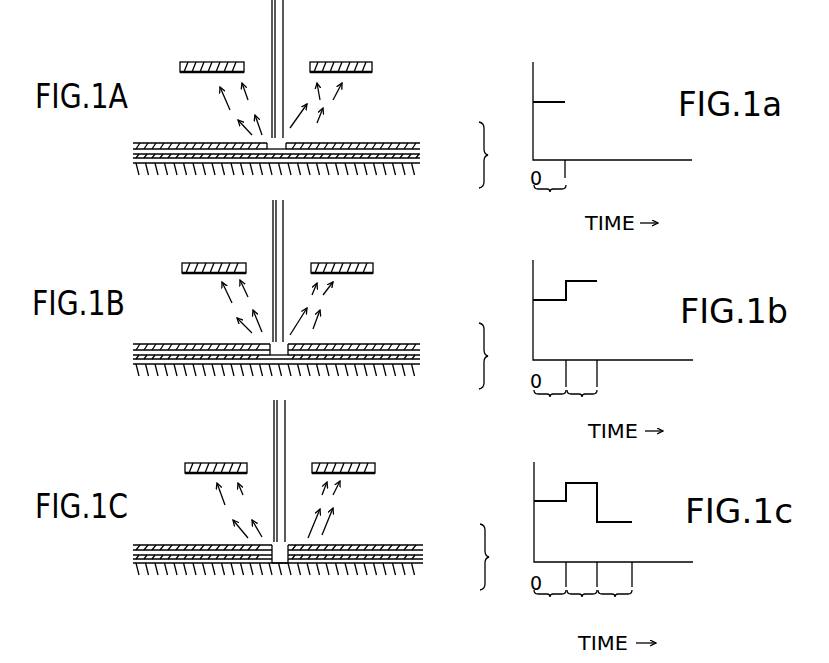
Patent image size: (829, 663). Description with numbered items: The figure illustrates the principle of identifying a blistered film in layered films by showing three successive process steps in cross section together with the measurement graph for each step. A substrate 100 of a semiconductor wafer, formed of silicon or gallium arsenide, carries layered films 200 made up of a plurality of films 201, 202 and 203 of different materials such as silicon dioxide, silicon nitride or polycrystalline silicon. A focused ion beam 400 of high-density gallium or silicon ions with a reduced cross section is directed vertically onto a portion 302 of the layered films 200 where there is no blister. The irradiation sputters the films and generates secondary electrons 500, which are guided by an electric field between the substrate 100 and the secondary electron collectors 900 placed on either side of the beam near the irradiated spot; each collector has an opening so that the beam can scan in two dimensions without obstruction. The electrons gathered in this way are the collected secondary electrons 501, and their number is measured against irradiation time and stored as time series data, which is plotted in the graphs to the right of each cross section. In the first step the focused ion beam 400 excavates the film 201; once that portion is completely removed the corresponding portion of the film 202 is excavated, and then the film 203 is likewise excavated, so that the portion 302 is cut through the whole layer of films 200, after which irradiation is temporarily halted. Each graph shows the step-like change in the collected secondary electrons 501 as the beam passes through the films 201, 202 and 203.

In FIG. 1A, the substrate 100 is at (153, 165).
In FIG. 1B, the substrate 100 is at (275, 390).
In FIG. 1C, the substrate 100 is at (275, 593).
In FIG. 1A, the layered films 200 is at (503, 155).
In FIG. 1B, the layered films 200 is at (503, 356).
In FIG. 1C, the layered films 200 is at (505, 557).
In FIG. 1A, the film 201 is at (420, 145).
In FIG. 1B, the film 201 is at (306, 339).
In FIG. 1C, the film 201 is at (307, 544).
In FIG. 1a, the film 201 is at (554, 202).
In FIG. 1b, the film 201 is at (550, 406).
In FIG. 1c, the film 201 is at (550, 606).
In FIG. 1A, the film 202 is at (420, 155).
In FIG. 1B, the film 202 is at (306, 358).
In FIG. 1C, the film 202 is at (307, 561).
In FIG. 1b, the film 202 is at (589, 406).
In FIG. 1c, the film 202 is at (589, 606).
In FIG. 1A, the film 203 is at (420, 163).
In FIG. 1B, the film 203 is at (307, 377).
In FIG. 1C, the film 203 is at (307, 578).
In FIG. 1c, the film 203 is at (625, 606).
In FIG. 1A, the portion 302 is at (288, 135).
In FIG. 1B, the portion 302 is at (323, 337).
In FIG. 1C, the portion 302 is at (332, 543).
In FIG. 1A, the focused ion beam 400 is at (286, 33).
In FIG. 1B, the focused ion beam 400 is at (312, 271).
In FIG. 1C, the focused ion beam 400 is at (307, 471).
In FIG. 1A, the secondary electrons 500 is at (238, 132).
In FIG. 1B, the secondary electrons 500 is at (300, 320).
In FIG. 1C, the secondary electrons 500 is at (305, 520).
In FIG. 1A, the collected secondary electrons 501 is at (222, 100).
In FIG. 1B, the collected secondary electrons 501 is at (280, 291).
In FIG. 1C, the collected secondary electrons 501 is at (275, 494).
In FIG. 1a, the collected secondary electrons 501 is at (512, 70).
In FIG. 1b, the collected secondary electrons 501 is at (512, 268).
In FIG. 1c, the collected secondary electrons 501 is at (512, 475).
In FIG. 1A, the secondary electron collectors 900 is at (195, 62).
In FIG. 1B, the secondary electron collectors 900 is at (277, 252).
In FIG. 1C, the secondary electron collectors 900 is at (291, 450).